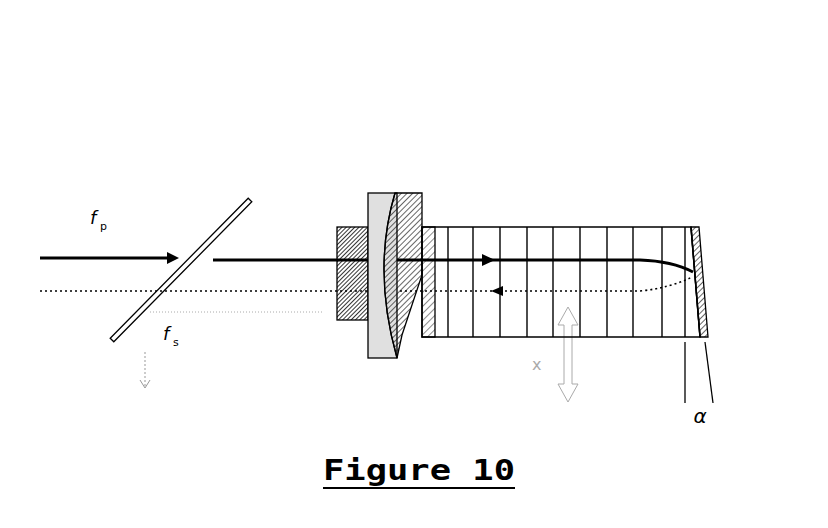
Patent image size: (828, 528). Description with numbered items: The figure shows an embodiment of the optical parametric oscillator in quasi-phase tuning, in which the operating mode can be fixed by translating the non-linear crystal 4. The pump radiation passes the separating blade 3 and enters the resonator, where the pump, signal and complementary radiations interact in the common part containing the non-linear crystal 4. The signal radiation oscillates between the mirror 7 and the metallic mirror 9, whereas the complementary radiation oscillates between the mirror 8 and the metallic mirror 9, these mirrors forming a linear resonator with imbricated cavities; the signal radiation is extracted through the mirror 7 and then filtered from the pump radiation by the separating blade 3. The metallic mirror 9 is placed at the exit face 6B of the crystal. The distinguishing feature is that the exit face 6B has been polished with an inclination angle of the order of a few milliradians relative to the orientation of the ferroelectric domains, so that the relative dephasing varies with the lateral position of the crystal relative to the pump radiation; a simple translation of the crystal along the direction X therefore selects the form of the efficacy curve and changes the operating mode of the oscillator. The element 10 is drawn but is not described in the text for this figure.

The separating blade 3 is at (223, 217).
The non-linear crystal 4 is at (532, 227).
The exit face 6B is at (673, 222).
The mirror 7 is at (380, 193).
The mirror 8 is at (428, 197).
The metallic mirror 9 is at (700, 255).
The pump source block 10 is at (350, 322).